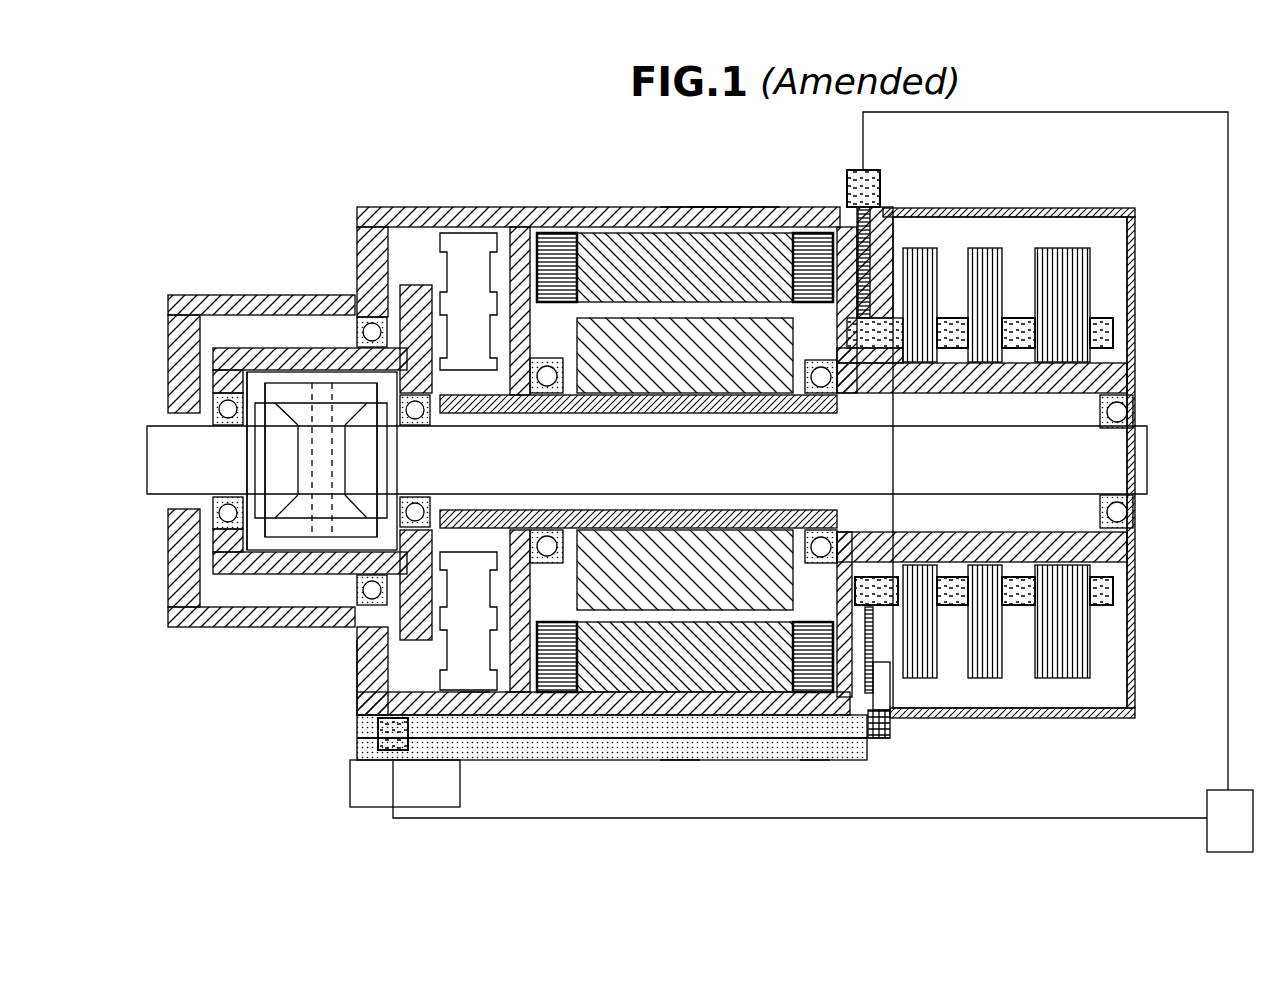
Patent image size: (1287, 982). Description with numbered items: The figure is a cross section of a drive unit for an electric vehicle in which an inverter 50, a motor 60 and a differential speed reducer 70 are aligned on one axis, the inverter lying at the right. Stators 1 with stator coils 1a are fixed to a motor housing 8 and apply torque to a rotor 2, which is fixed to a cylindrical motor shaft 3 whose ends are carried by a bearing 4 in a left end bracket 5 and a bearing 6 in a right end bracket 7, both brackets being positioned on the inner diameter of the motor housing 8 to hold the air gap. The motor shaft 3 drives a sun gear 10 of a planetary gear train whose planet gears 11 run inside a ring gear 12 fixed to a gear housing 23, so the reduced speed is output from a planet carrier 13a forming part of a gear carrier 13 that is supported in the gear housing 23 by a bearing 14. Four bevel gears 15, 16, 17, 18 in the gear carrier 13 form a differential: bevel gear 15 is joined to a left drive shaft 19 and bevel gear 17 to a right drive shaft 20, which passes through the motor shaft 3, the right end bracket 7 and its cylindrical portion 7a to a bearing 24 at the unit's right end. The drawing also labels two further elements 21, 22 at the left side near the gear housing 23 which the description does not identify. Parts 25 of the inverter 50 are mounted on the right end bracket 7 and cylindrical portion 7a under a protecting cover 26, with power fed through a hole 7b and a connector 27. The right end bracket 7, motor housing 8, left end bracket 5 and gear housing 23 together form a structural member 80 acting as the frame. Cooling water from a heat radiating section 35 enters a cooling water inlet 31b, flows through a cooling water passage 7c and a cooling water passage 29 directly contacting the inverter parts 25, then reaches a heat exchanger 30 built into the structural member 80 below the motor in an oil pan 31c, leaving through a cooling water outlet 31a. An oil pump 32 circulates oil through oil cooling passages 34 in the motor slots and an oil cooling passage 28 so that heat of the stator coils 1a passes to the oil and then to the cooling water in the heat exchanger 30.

The stator 1 is at (652, 325).
The stator coil 1a is at (818, 262).
The rotor 2 is at (600, 380).
The motor shaft 3 is at (546, 362).
The bearing 4 is at (520, 310).
The left end bracket 5 is at (462, 345).
The bearing 6 is at (812, 362).
The right end bracket 7 is at (900, 240).
The cylindrical portion 7a is at (1027, 363).
The hole 7b is at (882, 690).
The cooling water passage 7c is at (870, 250).
The motor housing 8 is at (723, 200).
The sun gear 10 is at (675, 745).
The planet gears 11 is at (515, 715).
The ring gear 12 is at (555, 715).
The gear carrier 13 is at (215, 572).
The planet carrier 13a is at (470, 715).
The bearing 14 is at (358, 645).
The bevel gear 15 is at (252, 505).
The bevel gear 16 is at (292, 535).
The bevel gear 17 is at (352, 498).
The bevel gear 18 is at (300, 395).
The left drive shaft 19 is at (147, 430).
The right drive shaft 20 is at (414, 398).
The bearing 21 is at (228, 400).
The bearing 22 is at (370, 330).
The gear housing 23 is at (432, 215).
The bearing 24 is at (1134, 405).
The parts of inverter 25 is at (1045, 247).
The protecting cover 26 is at (1138, 220).
The connector 27 is at (890, 740).
The oil cooling passage 28 is at (780, 740).
The cooling water passage 29 is at (1113, 340).
The heat exchanger 30 is at (628, 760).
The cooling water outlet 31a is at (378, 735).
The cooling water inlet 31b is at (858, 175).
The oil pan 31c is at (665, 760).
The oil pump 32 is at (350, 782).
The oil cooling passages 34 is at (815, 760).
The heat radiating section 35 is at (1238, 802).
The inverter 50 is at (1102, 223).
The motor 60 is at (704, 197).
The differential speed reducer 70 is at (320, 292).
The structural member 80 is at (857, 760).